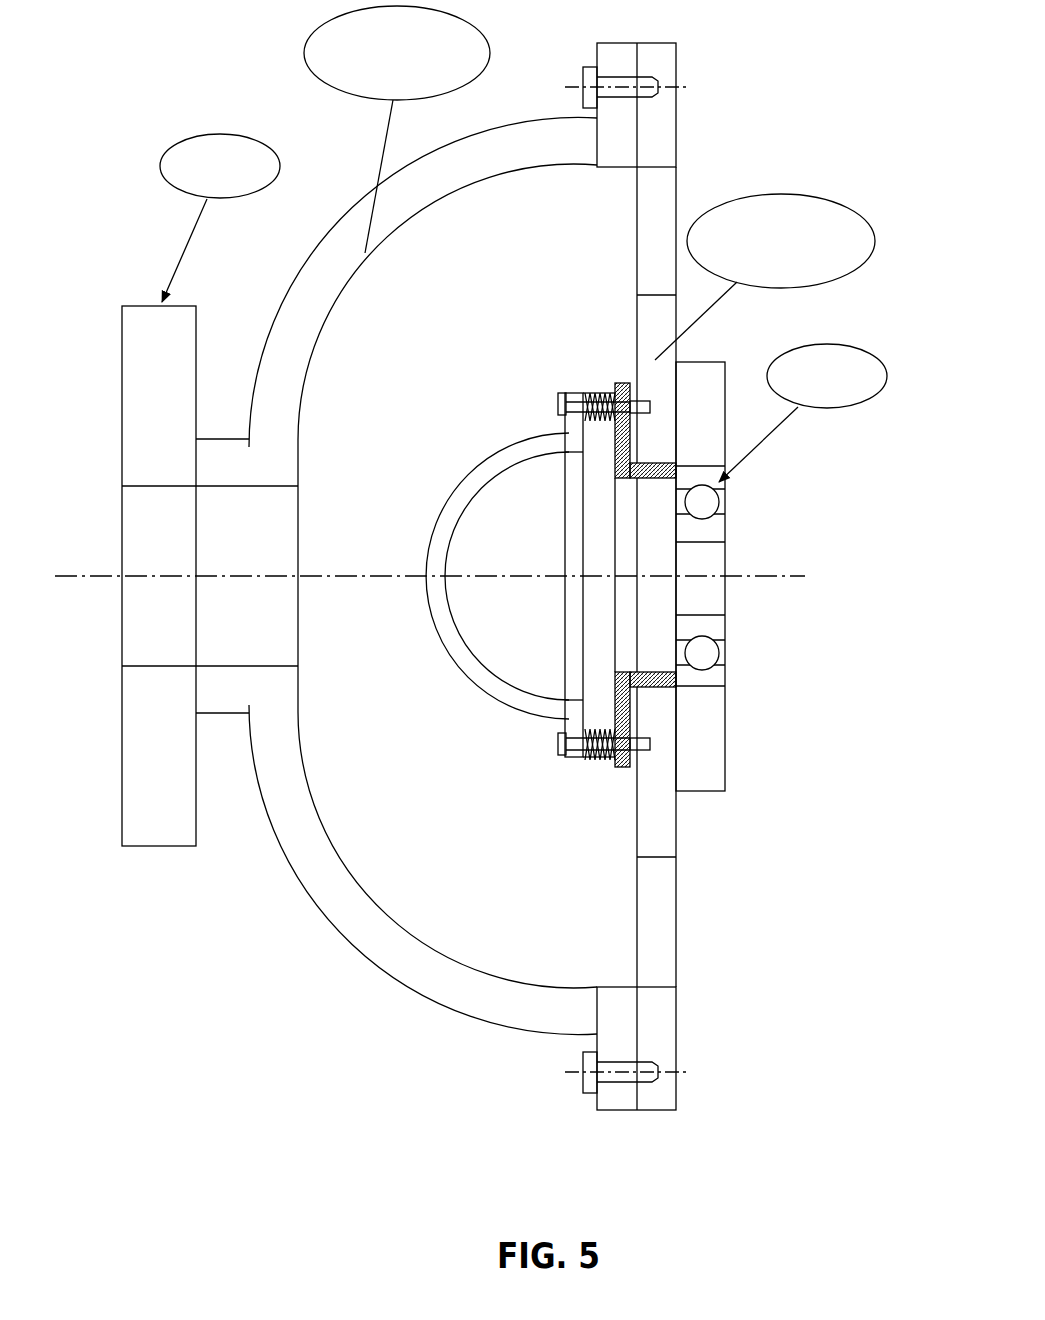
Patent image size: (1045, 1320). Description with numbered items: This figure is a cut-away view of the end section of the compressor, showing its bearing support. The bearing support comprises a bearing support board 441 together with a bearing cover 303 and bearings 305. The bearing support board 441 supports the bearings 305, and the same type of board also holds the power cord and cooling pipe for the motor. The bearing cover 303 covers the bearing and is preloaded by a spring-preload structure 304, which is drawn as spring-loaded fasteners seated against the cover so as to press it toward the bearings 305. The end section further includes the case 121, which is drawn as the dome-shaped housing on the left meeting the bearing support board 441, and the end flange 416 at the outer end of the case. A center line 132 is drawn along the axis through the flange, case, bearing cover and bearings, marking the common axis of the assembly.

The case 121 is at (527, 128).
The end flange 416 is at (120, 360).
The shaft axis / centerline 132 is at (148, 580).
The bearing cover 303 is at (500, 447).
The spring-preload structure 304 is at (598, 760).
The bearings 305 is at (712, 654).
The bearing support board 441 is at (720, 576).